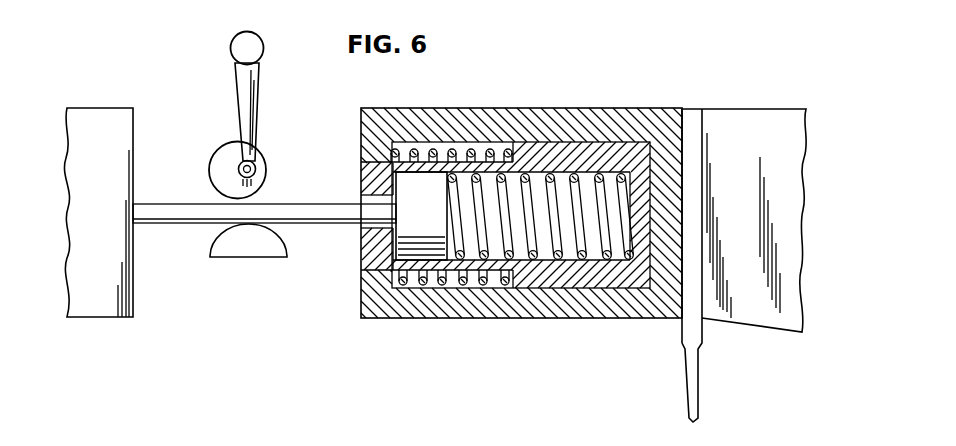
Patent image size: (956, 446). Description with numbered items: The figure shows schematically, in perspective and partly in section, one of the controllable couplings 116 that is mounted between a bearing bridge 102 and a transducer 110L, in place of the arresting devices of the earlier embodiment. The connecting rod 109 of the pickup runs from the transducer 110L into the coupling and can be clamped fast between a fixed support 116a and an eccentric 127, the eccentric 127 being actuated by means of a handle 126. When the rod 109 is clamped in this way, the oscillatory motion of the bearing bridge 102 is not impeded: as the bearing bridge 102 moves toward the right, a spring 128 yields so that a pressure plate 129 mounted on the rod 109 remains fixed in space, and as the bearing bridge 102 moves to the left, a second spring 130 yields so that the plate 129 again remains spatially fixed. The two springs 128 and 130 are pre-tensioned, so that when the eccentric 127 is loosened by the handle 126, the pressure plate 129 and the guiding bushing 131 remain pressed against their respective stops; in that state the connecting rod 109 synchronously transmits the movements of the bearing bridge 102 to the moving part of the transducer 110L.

The bearing bridge 102 is at (737, 116).
The connecting rod 109 is at (285, 213).
The transducer 110L is at (119, 112).
The controllable coupling 116 is at (342, 171).
The fixed support 116a is at (262, 250).
The handle 126 is at (254, 99).
The eccentric 127 is at (217, 151).
The spring 128 is at (429, 152).
The pressure plate 129 is at (407, 243).
The spring 130 is at (476, 200).
The guiding bushing 131 is at (598, 146).